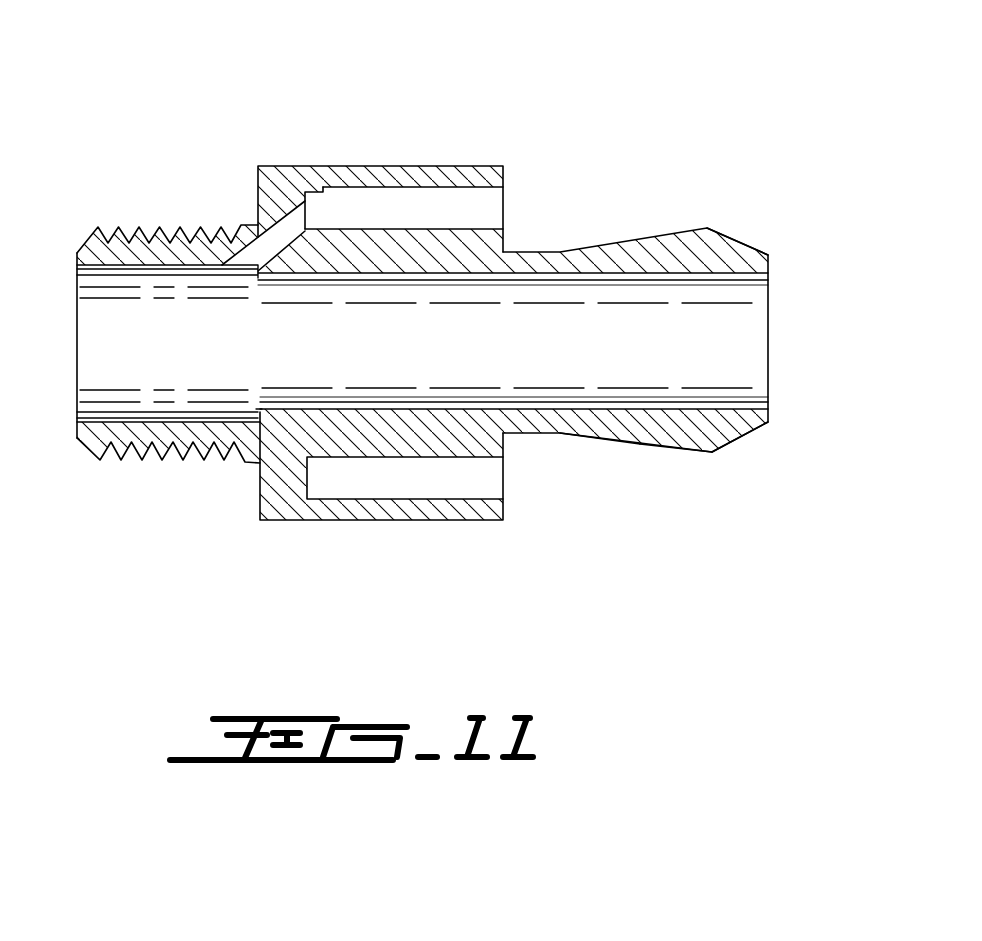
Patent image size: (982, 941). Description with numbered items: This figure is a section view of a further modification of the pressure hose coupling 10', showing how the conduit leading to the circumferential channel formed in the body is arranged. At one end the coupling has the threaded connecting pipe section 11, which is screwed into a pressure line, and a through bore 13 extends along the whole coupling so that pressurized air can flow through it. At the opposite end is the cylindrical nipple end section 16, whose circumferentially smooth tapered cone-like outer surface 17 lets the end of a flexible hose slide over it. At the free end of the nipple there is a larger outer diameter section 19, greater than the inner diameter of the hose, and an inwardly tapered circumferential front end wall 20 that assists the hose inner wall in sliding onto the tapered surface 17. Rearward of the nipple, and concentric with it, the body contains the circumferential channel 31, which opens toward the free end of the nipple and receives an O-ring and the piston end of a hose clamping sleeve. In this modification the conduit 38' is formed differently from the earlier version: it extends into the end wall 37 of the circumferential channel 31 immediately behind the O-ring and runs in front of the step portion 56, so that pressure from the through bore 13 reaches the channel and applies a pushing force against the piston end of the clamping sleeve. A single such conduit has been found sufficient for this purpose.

The pressure hose coupling 10' is at (422, 222).
The threaded connecting pipe section 11 is at (110, 453).
The through bore 13 is at (623, 308).
The cylindrical nipple end section 16 is at (603, 447).
The smooth tapered cone-like outer surface 17 is at (663, 446).
The larger outer diameter section 19 is at (710, 452).
The inwardly tapered circumferential front end wall 20 is at (737, 240).
The circumferential channel 31 is at (423, 200).
The end wall of the channel 37 is at (323, 187).
The conduit 38' is at (244, 197).
The step portion 56 is at (253, 413).